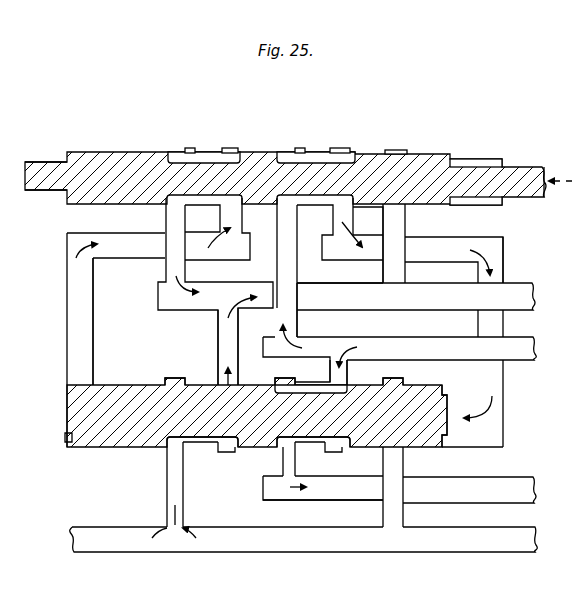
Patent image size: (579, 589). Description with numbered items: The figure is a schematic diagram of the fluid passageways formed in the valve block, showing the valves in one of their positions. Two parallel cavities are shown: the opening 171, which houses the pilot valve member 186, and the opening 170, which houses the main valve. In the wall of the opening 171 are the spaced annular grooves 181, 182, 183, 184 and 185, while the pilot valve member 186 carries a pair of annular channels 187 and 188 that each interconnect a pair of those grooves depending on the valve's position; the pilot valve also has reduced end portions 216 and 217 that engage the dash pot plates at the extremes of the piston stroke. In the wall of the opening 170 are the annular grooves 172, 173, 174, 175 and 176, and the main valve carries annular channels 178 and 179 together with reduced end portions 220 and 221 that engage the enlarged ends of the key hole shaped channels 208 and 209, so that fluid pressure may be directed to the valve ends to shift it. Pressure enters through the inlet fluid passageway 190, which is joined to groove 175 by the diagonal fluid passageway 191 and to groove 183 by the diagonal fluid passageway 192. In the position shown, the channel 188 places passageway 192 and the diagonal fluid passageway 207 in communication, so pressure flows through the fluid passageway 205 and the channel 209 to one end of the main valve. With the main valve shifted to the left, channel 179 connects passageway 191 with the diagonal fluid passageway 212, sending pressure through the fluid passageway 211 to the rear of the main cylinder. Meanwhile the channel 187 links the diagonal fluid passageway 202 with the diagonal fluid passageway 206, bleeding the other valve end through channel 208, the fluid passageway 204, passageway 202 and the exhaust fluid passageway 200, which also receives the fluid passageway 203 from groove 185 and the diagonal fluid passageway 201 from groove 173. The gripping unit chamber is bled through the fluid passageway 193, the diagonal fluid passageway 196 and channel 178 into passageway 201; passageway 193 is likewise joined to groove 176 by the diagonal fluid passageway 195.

The reduced end portion 216 is at (39, 162).
The reduced end portion 217 is at (527, 166).
The annular groove 181 is at (166, 151).
The annular channel 187 is at (190, 148).
The annular groove 182 is at (230, 148).
The annular groove 183 is at (281, 151).
The annular channel 188 is at (304, 149).
The annular groove 184 is at (343, 149).
The annular groove 185 is at (399, 150).
The pilot valve member 186 is at (431, 165).
The opening 171 is at (488, 160).
The fluid passageway 204 is at (84, 233).
The diagonal fluid passageway 202 is at (163, 218).
The diagonal fluid passageway 206 is at (238, 219).
The diagonal fluid passageway 207 is at (335, 220).
The fluid passageway 203 is at (402, 222).
The fluid passageway 205 is at (481, 237).
The fluid passageway 200 is at (369, 288).
The key hole shaped channel 208 is at (72, 302).
The diagonal fluid passageway 201 is at (224, 328).
The diagonal fluid passageway 192 is at (297, 320).
The fluid passageway 190 is at (452, 339).
The key hole shaped channel 209 is at (498, 325).
The reduced end portion 220 is at (67, 392).
The annular groove 172 is at (168, 378).
The annular groove 174 is at (275, 378).
The diagonal fluid passageway 191 is at (345, 370).
The annular groove 176 is at (405, 380).
The opening 170 is at (503, 398).
The reduced end portion 221 is at (450, 432).
The annular channel 178 is at (203, 442).
The diagonal fluid passageway 212 is at (280, 460).
The annular groove 173 is at (229, 455).
The annular channel 179 is at (320, 444).
The annular groove 175 is at (343, 452).
The diagonal fluid passageway 196 is at (167, 487).
The fluid passageway 211 is at (283, 507).
The diagonal fluid passageway 195 is at (403, 513).
The fluid passageway 193 is at (348, 545).